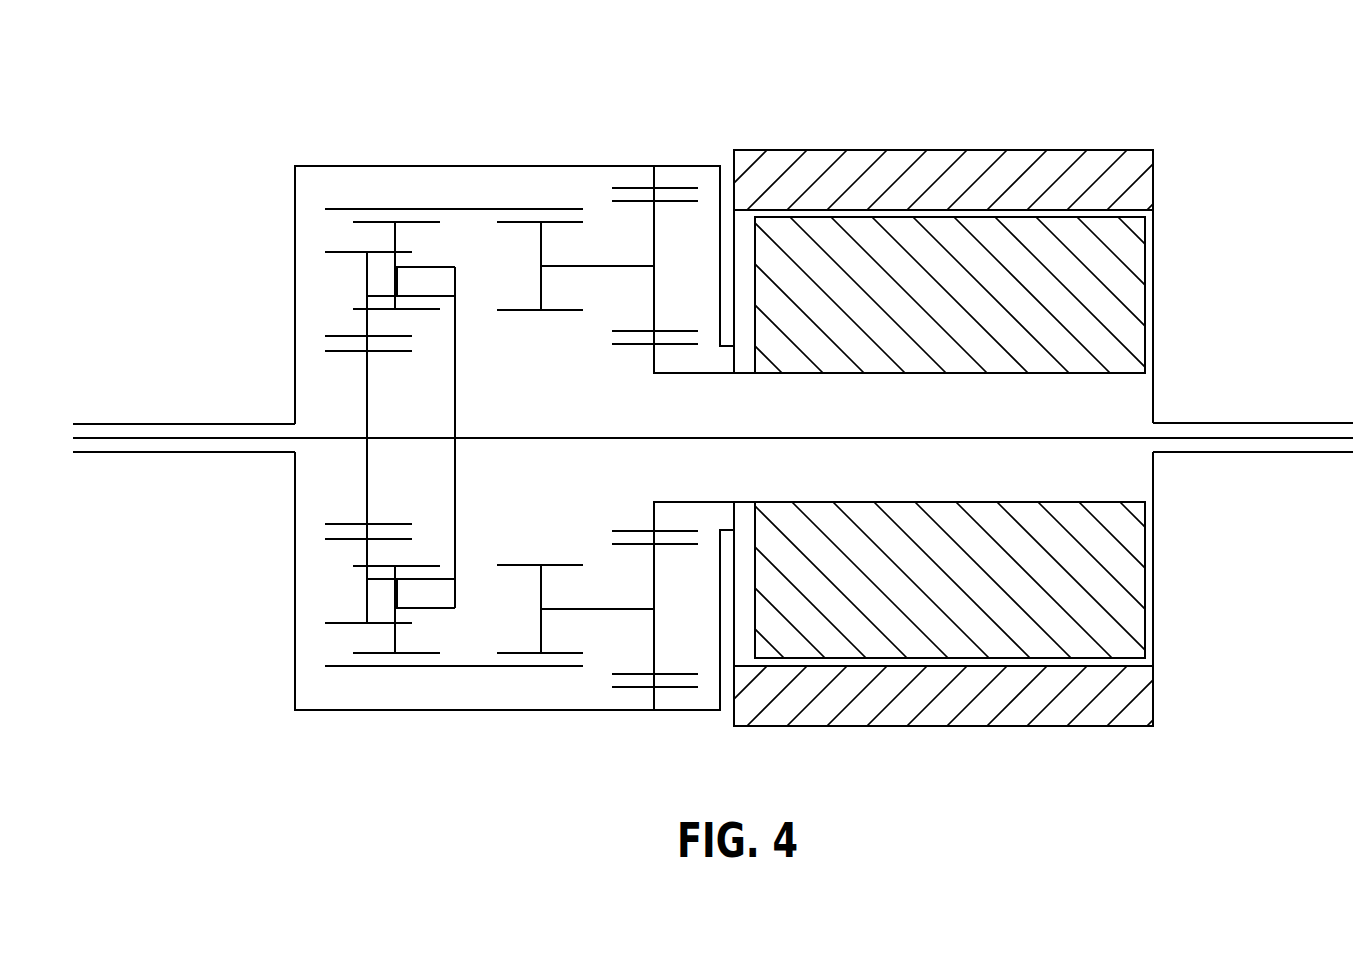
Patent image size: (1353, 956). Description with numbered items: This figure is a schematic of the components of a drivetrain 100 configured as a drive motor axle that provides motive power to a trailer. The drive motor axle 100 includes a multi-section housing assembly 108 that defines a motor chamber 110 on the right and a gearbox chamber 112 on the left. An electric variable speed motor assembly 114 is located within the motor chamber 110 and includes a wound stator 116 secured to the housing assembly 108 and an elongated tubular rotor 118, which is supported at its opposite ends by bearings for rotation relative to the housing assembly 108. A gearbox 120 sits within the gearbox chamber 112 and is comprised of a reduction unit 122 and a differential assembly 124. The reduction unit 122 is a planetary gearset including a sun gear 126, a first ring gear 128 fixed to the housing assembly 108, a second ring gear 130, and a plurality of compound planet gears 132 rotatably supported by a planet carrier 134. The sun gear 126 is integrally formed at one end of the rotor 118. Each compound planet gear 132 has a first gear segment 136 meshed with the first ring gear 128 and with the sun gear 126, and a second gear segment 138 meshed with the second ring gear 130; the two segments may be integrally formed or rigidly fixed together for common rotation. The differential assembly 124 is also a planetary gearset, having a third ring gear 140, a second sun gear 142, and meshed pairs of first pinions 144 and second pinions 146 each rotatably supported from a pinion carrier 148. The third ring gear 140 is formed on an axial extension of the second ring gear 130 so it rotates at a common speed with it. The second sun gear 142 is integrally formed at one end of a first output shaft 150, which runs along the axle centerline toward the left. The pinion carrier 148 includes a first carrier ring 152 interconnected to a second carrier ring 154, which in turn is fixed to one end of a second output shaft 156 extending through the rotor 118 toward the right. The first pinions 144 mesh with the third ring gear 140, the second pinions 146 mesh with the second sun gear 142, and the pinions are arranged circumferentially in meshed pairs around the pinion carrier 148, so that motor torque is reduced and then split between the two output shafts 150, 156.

The drivetrain 100 is at (951, 378).
The multi-section housing assembly 108 is at (721, 148).
The motor chamber 110 is at (907, 152).
The gearbox chamber 112 is at (480, 167).
The electric variable speed motor assembly 114 is at (1098, 240).
The wound stator 116 is at (1087, 162).
The rotor 118 is at (1123, 285).
The gearbox 120 is at (540, 202).
The reduction unit 122 is at (597, 203).
The differential assembly 124 is at (362, 200).
The sun gear 126 is at (633, 348).
The first ring gear 128 is at (671, 187).
The second ring gear 130 is at (498, 209).
The compound planet gears 132 is at (553, 315).
The planet carrier 134 is at (587, 267).
The first gear segment 136 is at (675, 205).
The second gear segment 138 is at (523, 226).
The third ring gear 140 is at (337, 209).
The second sun gear 142 is at (388, 352).
The first pinions 144 is at (385, 223).
The second pinions 146 is at (337, 252).
The pinion carrier 148 is at (458, 473).
The first output shaft 150 is at (333, 437).
The first carrier ring 152 is at (420, 265).
The second carrier ring 154 is at (428, 297).
The second output shaft 156 is at (643, 440).